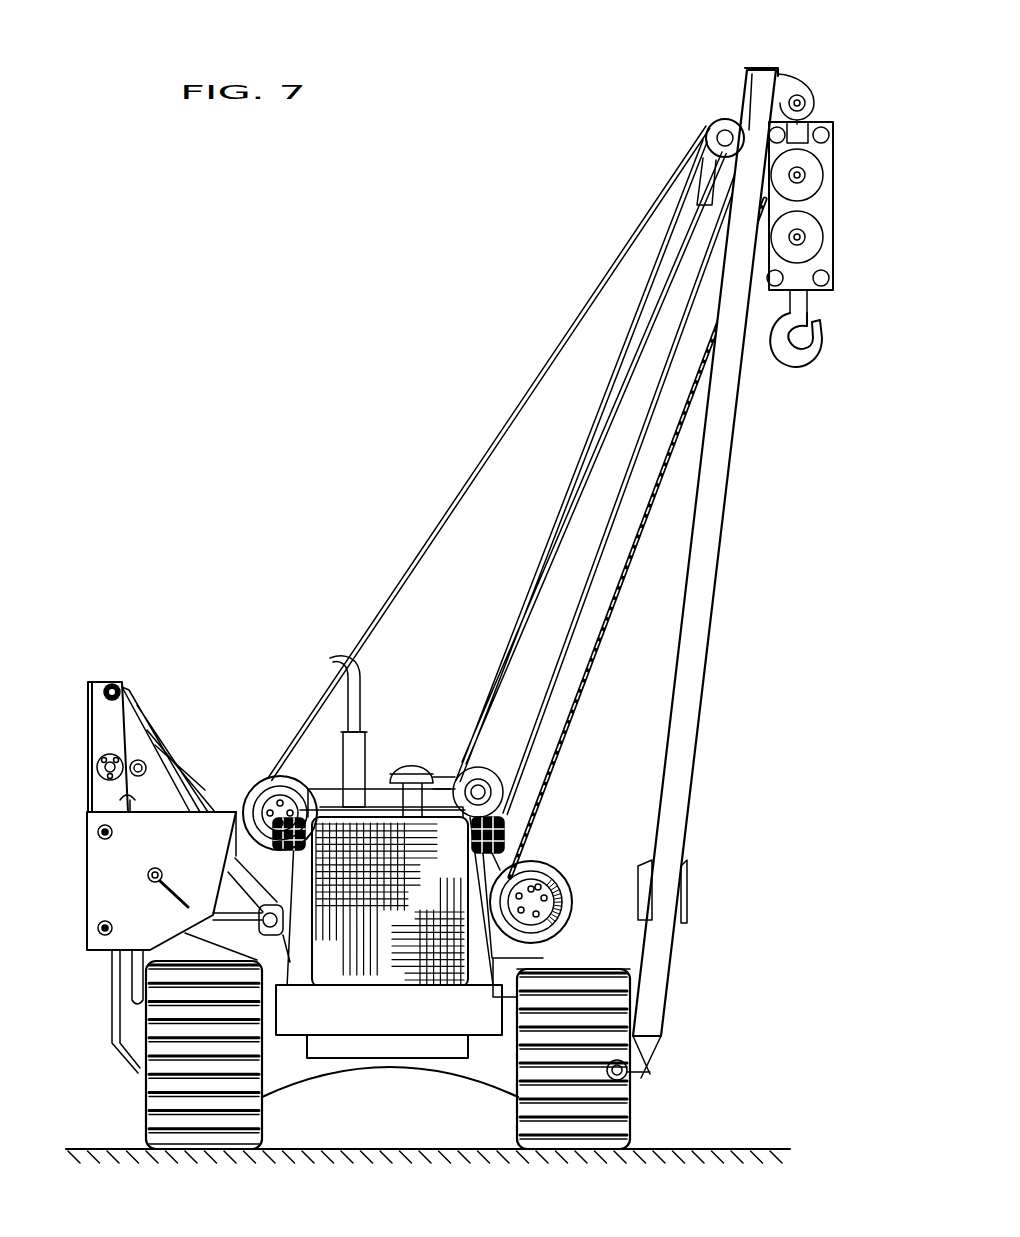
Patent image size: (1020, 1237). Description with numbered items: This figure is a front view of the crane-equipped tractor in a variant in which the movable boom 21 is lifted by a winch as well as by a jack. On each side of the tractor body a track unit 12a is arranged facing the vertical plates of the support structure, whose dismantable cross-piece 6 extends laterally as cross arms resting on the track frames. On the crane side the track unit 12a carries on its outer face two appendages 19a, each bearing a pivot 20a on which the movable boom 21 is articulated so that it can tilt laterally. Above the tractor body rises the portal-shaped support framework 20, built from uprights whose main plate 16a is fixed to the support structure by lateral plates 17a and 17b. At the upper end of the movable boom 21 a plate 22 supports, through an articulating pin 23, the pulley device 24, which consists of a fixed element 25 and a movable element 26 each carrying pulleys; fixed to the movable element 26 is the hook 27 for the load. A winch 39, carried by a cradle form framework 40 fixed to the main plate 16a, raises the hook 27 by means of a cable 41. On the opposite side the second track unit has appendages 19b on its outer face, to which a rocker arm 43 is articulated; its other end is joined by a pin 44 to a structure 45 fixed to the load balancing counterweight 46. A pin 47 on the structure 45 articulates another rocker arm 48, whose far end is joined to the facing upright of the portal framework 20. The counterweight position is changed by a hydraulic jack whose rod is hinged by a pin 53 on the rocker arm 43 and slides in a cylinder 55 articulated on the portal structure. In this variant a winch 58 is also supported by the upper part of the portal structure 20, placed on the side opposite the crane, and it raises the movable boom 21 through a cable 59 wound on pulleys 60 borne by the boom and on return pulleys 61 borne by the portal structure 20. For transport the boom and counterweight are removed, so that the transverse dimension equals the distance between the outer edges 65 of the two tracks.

The dismantable cross-piece 6 is at (478, 1060).
The track unit 12a is at (597, 966).
The main plate 16a is at (512, 842).
The lateral plate 17a is at (488, 980).
The lateral plate 17b is at (308, 975).
The appendage 19a is at (632, 1077).
The appendage 19b is at (142, 1066).
The portal-shaped support framework 20 is at (378, 758).
The pivot 20a is at (641, 1075).
The movable boom 21 is at (706, 545).
The plate 22 is at (760, 68).
The articulating pin 23 is at (800, 92).
The pulley device 24 is at (830, 297).
The fixed element 25 is at (800, 176).
The movable element 26 is at (812, 256).
The hook 27 is at (784, 364).
The winch 39 is at (542, 866).
The cradle form framework 40 is at (527, 975).
The cable 41 is at (600, 641).
The rocker arm 43 is at (112, 985).
The pin 44 is at (105, 752).
The structure 45 is at (96, 790).
The load balancing counterweight 46 is at (90, 903).
The pin 47 is at (112, 684).
The rocker arm 48 is at (160, 762).
The pin 53 is at (138, 720).
The cylinder 55 is at (222, 790).
The winch 58 is at (264, 785).
The cable 59 is at (388, 600).
The pulleys 60 is at (708, 120).
The return pulleys 61 is at (460, 755).
The outer edge 65 is at (137, 950).